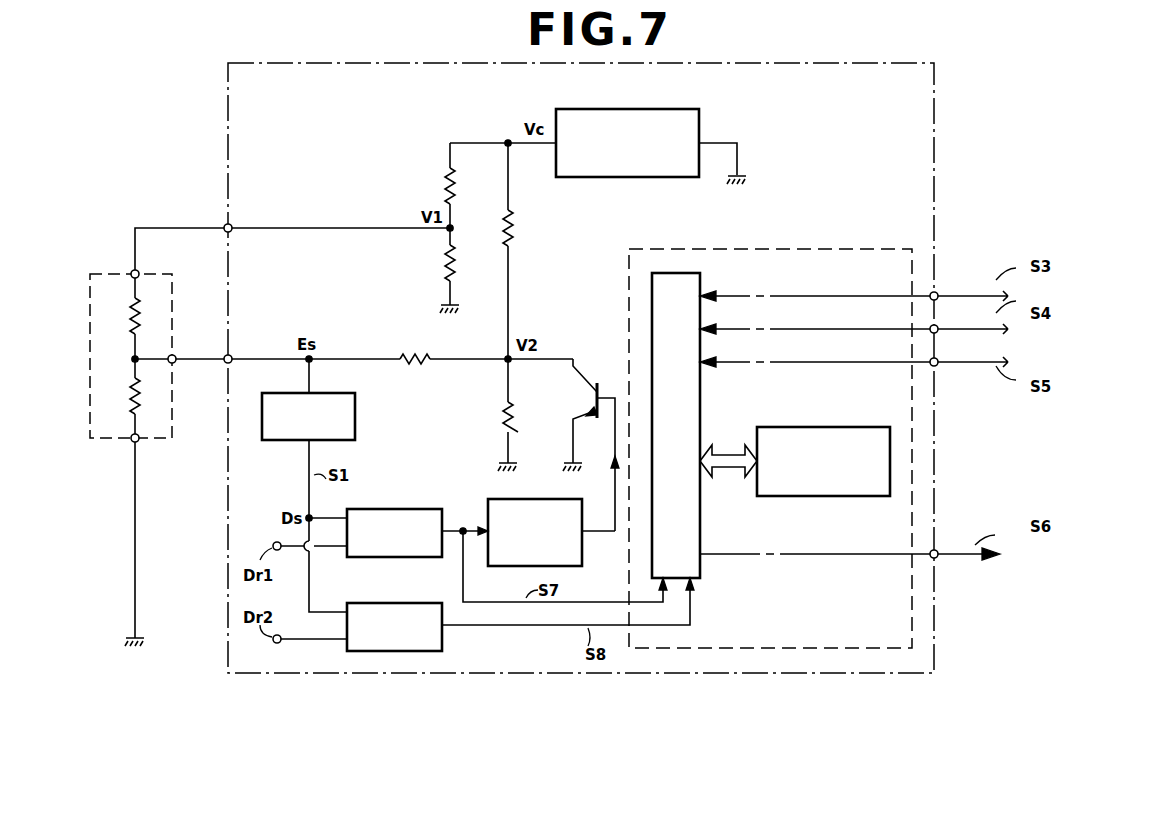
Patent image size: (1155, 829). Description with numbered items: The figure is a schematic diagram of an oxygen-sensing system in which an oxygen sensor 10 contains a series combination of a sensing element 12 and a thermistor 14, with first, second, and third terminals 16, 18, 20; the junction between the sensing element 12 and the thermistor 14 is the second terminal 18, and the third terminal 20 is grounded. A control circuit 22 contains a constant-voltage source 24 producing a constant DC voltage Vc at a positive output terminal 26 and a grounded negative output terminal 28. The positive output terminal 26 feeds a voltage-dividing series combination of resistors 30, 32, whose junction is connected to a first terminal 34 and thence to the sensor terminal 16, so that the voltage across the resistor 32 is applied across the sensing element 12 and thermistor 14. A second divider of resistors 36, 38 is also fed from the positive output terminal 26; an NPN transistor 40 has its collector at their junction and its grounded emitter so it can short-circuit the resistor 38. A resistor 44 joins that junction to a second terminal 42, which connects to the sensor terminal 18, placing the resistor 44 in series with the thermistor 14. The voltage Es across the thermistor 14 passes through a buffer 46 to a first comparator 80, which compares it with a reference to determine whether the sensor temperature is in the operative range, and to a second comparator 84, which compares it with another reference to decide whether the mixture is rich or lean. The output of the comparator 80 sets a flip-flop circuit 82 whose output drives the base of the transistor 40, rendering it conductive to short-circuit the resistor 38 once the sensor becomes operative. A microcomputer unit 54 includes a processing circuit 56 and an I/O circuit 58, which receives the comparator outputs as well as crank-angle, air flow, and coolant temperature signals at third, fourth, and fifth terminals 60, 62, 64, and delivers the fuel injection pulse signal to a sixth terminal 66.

The oxygen sensor 10 is at (87, 260).
The sensing element 12 is at (127, 325).
The thermistor 14 is at (130, 394).
The first terminal 16 is at (139, 272).
The second terminal 18 is at (176, 357).
The third terminal 20 is at (139, 441).
The control circuit 22 is at (397, 673).
The constant-voltage source 24 is at (701, 120).
The positive output terminal 26 is at (554, 146).
The negative output terminal 28 is at (700, 150).
The resistor 30 is at (458, 188).
The resistor 32 is at (458, 260).
The first terminal 34 is at (232, 226).
The resistor 36 is at (516, 228).
The resistor 38 is at (516, 412).
The NPN transistor 40 is at (600, 375).
The second terminal 42 is at (232, 357).
The resistor 44 is at (424, 349).
The buffer 46 is at (357, 418).
The microcomputer unit 54 is at (862, 247).
The processing circuit 56 is at (868, 425).
The input/output circuit 58 is at (702, 405).
The third terminal 60 is at (938, 293).
The fourth terminal 62 is at (938, 326).
The fifth terminal 64 is at (938, 366).
The sixth terminal 66 is at (938, 551).
The first comparator 80 is at (421, 491).
The flip-flop circuit 82 is at (488, 497).
The second comparator 84 is at (421, 585).